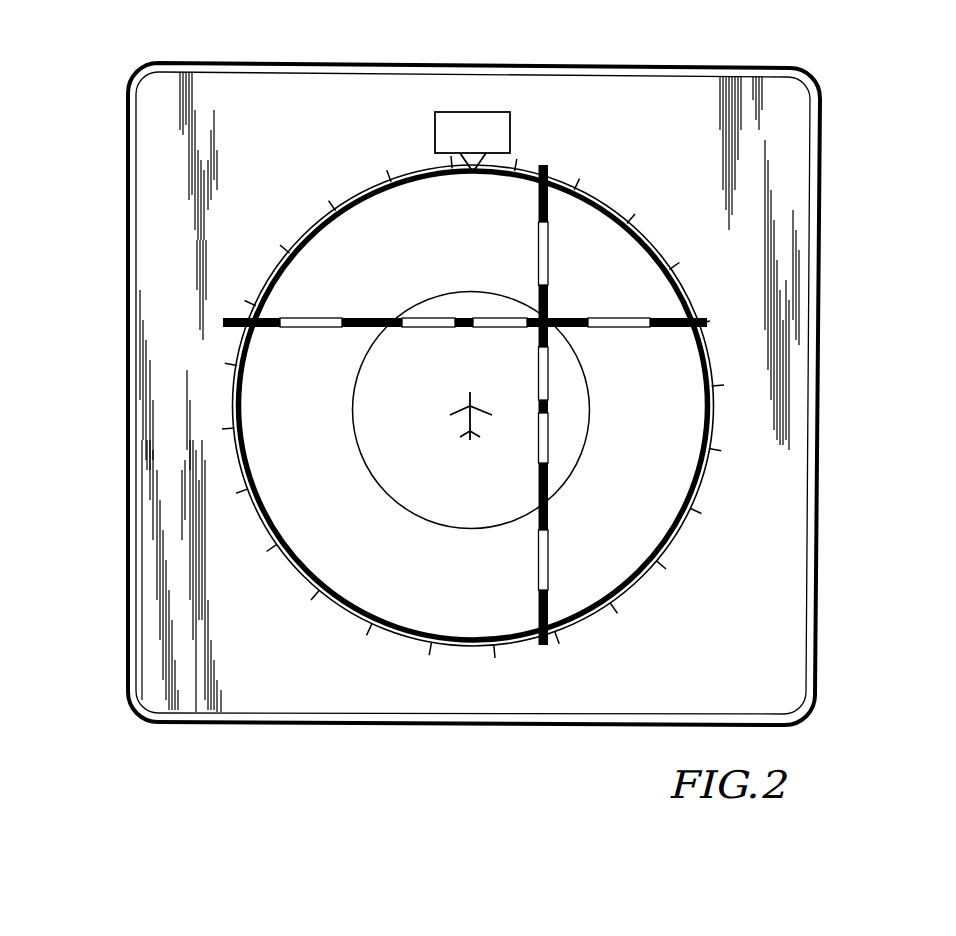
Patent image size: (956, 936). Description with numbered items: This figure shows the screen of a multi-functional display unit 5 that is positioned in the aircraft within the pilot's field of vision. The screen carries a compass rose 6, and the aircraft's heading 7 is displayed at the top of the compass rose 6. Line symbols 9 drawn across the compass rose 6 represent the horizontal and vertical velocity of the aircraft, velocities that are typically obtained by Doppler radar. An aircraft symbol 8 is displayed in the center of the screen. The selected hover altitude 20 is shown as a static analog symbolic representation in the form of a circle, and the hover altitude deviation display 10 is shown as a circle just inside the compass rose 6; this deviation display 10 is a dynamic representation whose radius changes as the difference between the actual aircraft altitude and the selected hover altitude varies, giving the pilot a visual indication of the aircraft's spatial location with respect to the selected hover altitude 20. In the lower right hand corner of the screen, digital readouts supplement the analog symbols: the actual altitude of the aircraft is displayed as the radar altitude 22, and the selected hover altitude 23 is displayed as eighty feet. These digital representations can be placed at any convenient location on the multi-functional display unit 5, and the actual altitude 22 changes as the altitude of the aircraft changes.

The multi-functional display unit 5 is at (233, 60).
The compass rose 6 is at (563, 187).
The aircraft heading 7 is at (503, 112).
The aircraft symbol 8 is at (468, 405).
The line symbols 9 is at (298, 316).
The hover altitude deviation display 10 is at (235, 442).
The selected hover altitude 20 is at (352, 412).
The current altitude 22 is at (777, 660).
The selected hover altitude 23 is at (770, 692).